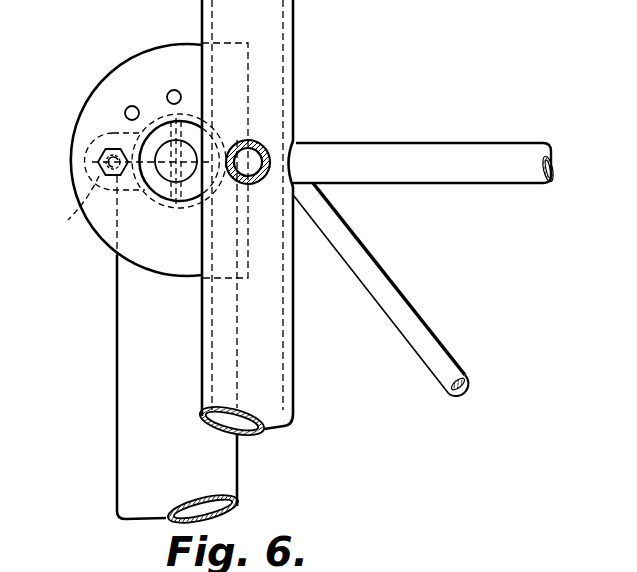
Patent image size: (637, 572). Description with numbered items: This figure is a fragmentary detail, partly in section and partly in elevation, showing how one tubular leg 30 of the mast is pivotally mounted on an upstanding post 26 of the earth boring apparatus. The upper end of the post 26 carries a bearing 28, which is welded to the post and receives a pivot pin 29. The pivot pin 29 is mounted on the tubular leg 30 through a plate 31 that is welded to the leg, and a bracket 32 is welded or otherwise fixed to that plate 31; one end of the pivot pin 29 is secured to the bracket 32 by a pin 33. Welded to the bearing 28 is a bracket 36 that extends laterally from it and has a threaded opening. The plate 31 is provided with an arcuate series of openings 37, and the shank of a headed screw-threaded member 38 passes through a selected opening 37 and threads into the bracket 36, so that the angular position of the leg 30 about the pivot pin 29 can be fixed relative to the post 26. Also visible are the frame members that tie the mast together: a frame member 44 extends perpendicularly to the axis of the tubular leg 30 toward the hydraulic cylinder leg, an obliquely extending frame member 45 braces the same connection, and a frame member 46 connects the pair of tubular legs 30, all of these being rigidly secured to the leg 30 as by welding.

The upstanding post 26 is at (128, 498).
The bearing 28 is at (160, 115).
The pivot pin 29 is at (167, 174).
The tubular leg 30 is at (268, 410).
The plate 31 is at (168, 58).
The bracket 32 is at (183, 134).
The pin 33 is at (165, 202).
The bracket 36 is at (78, 213).
The openings 37 is at (168, 91).
The headed screw-threaded member 38 is at (100, 158).
The frame member 44 is at (477, 176).
The obliquely extending frame member 45 is at (403, 303).
The frame member 46 is at (262, 145).